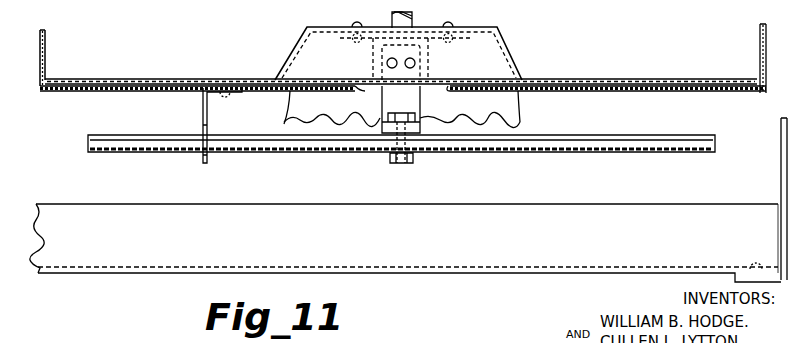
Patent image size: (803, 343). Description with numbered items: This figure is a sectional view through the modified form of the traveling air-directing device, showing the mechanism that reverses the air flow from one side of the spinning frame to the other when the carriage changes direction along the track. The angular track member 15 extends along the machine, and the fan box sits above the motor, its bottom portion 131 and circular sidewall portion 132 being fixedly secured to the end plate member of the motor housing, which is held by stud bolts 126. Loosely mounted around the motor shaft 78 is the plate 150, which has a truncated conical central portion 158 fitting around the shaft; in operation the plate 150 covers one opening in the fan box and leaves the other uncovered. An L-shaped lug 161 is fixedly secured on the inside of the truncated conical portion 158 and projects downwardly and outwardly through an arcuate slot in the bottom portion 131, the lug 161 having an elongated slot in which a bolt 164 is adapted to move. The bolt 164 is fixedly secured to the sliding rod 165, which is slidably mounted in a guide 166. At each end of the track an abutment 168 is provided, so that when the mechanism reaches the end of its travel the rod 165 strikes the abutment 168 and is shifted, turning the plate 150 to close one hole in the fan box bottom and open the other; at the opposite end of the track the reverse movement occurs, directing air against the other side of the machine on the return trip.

The angular track member 15 is at (602, 193).
The motor shaft 78 is at (408, 22).
The stud bolt 126 is at (512, 108).
The bottom portion of fan box 131 is at (712, 94).
The circular sidewall portion 132 is at (758, 45).
The plate 150 is at (658, 62).
The truncated conical central portion 158 is at (510, 56).
The L-shaped lug 161 is at (420, 110).
The bolt 164 is at (397, 163).
The sliding rod 165 is at (593, 122).
The guide 166 is at (208, 125).
The abutment 168 is at (780, 146).